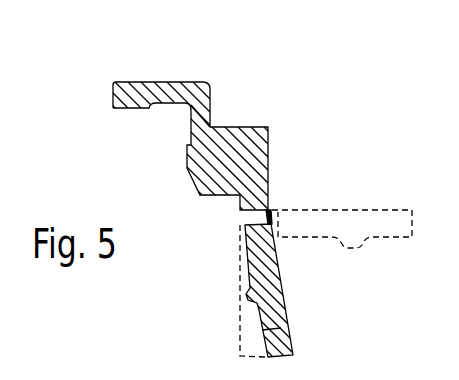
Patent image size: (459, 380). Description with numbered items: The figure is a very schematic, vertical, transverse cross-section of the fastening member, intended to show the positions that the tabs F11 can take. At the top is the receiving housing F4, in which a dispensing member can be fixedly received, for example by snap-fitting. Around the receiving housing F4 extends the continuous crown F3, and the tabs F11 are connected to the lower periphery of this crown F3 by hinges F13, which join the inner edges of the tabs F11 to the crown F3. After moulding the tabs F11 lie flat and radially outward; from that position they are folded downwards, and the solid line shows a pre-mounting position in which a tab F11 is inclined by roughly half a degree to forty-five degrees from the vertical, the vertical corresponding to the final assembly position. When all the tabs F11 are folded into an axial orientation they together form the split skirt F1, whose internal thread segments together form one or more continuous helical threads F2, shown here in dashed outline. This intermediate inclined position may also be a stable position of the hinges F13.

The receiving housing F4 is at (170, 94).
The crown F3 is at (232, 153).
The hinges F13 is at (268, 212).
The split skirt F1 is at (290, 285).
The tabs F11 is at (281, 328).
The continuous helical thread F2 is at (243, 304).